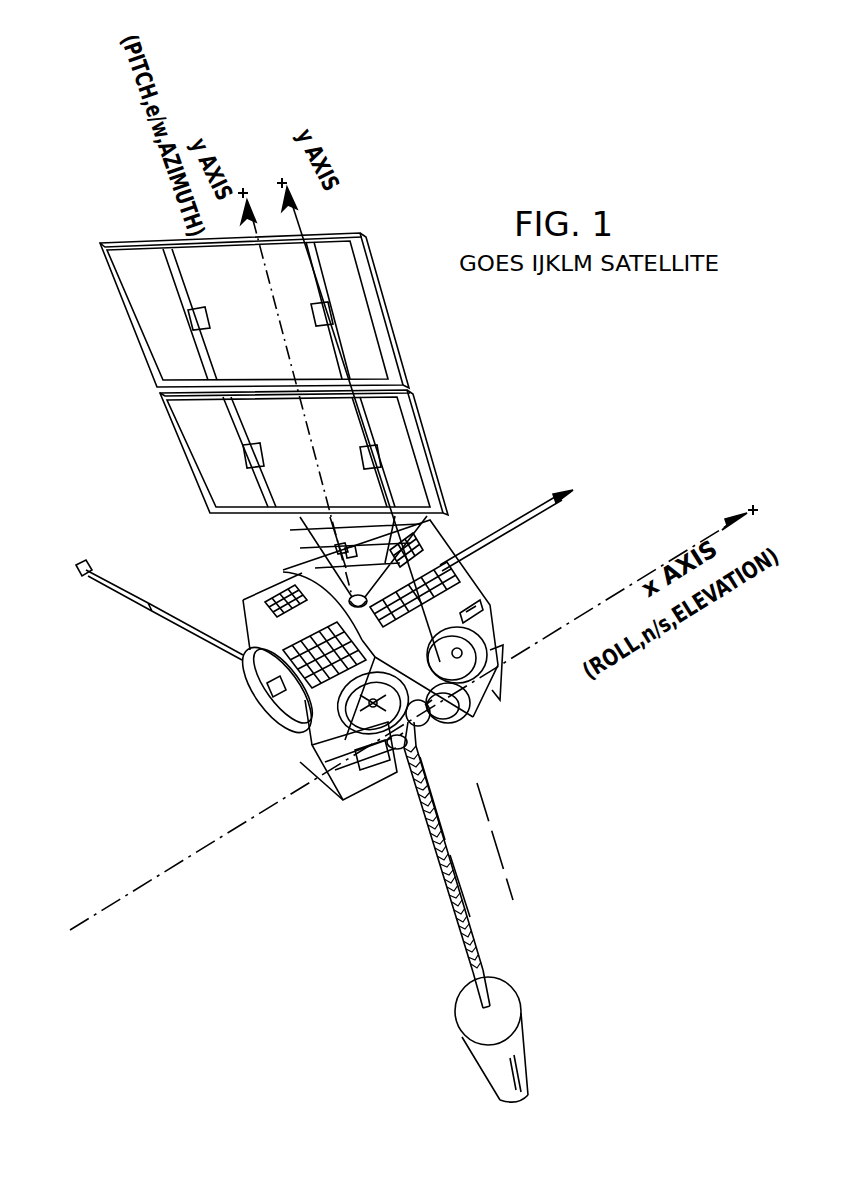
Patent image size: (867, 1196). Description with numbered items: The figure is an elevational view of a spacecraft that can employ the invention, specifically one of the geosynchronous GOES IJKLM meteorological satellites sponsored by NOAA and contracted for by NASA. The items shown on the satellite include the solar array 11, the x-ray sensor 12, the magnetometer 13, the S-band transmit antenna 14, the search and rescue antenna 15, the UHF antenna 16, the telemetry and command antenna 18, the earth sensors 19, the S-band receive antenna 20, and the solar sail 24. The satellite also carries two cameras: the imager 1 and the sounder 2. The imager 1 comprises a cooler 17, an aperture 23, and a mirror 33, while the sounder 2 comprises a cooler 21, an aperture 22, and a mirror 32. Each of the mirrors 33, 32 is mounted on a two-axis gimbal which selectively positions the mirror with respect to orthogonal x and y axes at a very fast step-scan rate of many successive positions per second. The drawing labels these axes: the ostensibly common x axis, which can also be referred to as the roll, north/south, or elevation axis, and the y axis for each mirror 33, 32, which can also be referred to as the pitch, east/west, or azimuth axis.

The imager 1 is at (390, 753).
The sounder 2 is at (503, 662).
The solar array 11 is at (123, 310).
The x-ray sensor 12 is at (312, 560).
The magnetometer 13 is at (80, 575).
The S-band transmit antenna 14 is at (290, 575).
The search and rescue antenna 15 is at (347, 740).
The UHF antenna 16 is at (330, 780).
The cooler 17 is at (352, 800).
The telemetry and command antenna 18 is at (560, 510).
The earth sensors 19 is at (484, 608).
The S-band receive antenna 20 is at (470, 640).
The cooler 21 is at (500, 693).
The aperture 22 is at (455, 722).
The aperture 23 is at (443, 700).
The solar sail 24 is at (520, 1020).
The mirror 32 is at (470, 706).
The mirror 33 is at (420, 735).